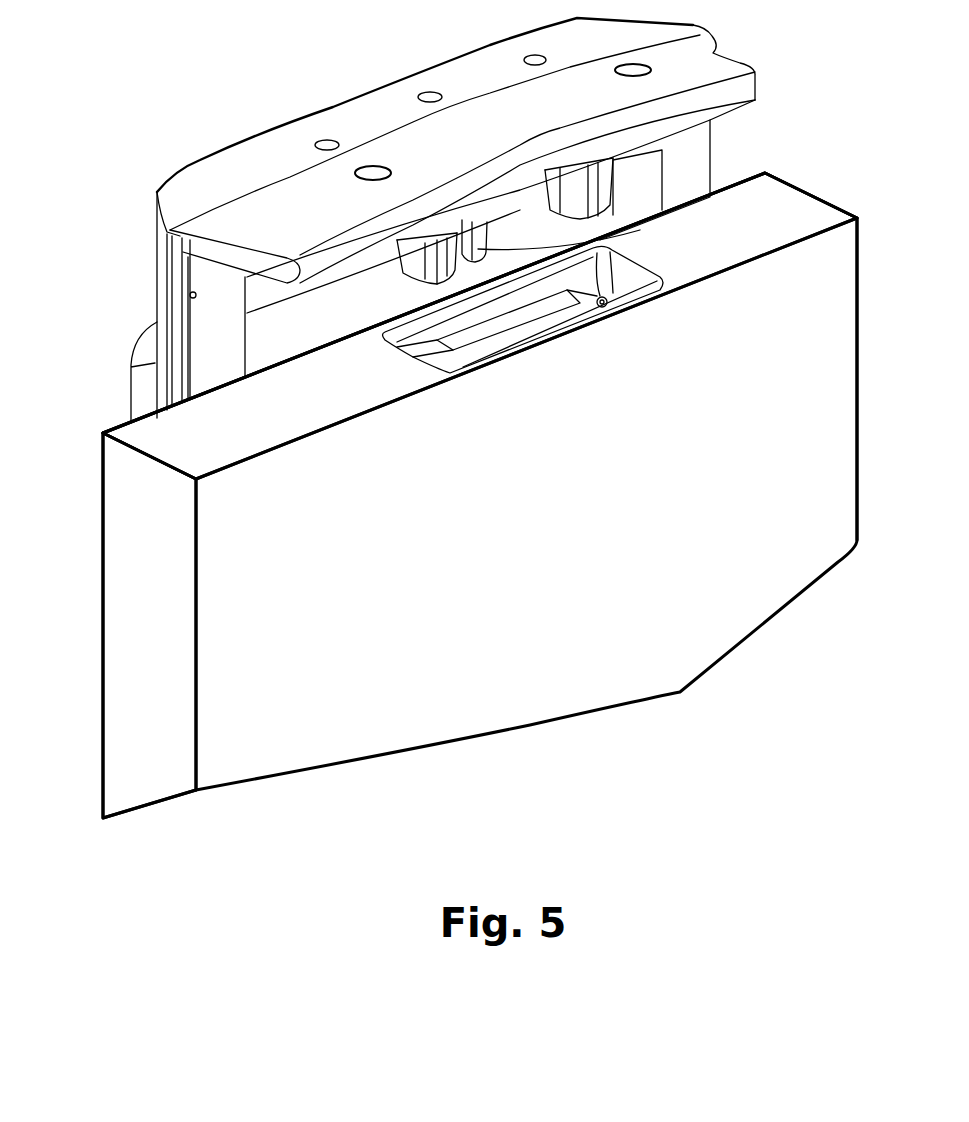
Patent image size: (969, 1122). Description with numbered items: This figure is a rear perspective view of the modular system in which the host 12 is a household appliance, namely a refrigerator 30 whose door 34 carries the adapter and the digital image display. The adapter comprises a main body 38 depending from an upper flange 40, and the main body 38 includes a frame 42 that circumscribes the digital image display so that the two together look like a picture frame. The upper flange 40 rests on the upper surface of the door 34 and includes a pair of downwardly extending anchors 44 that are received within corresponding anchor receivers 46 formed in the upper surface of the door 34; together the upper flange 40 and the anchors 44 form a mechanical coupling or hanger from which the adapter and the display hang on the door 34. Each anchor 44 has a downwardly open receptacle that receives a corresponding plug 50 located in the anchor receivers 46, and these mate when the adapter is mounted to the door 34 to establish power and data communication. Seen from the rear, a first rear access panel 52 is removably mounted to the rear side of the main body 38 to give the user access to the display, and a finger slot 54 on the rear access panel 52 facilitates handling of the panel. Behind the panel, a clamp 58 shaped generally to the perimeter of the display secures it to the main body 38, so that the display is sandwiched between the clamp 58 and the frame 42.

The host 12 is at (128, 551).
The refrigerator 30 is at (101, 497).
The door 34 is at (838, 348).
The main body 38 is at (687, 155).
The upper flange 40 is at (717, 62).
The frame 42 is at (137, 393).
The anchors 44 is at (437, 232).
The anchor receivers 46 is at (433, 358).
The plug 50 is at (603, 308).
The first rear access panel 52 is at (637, 207).
The finger slot 54 is at (705, 228).
The clamp 58 is at (478, 243).